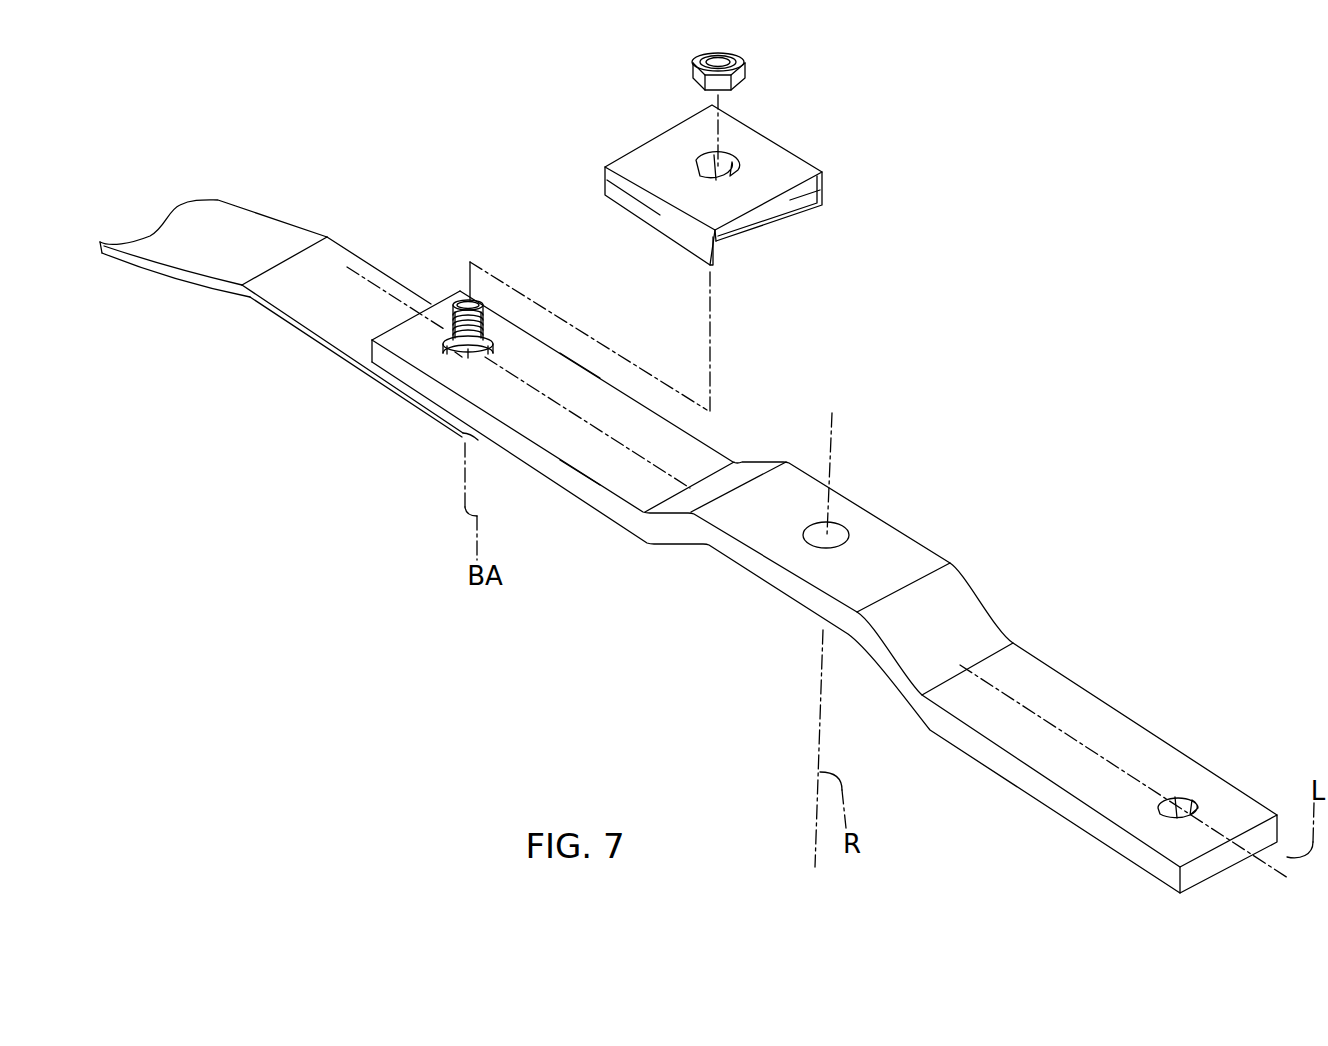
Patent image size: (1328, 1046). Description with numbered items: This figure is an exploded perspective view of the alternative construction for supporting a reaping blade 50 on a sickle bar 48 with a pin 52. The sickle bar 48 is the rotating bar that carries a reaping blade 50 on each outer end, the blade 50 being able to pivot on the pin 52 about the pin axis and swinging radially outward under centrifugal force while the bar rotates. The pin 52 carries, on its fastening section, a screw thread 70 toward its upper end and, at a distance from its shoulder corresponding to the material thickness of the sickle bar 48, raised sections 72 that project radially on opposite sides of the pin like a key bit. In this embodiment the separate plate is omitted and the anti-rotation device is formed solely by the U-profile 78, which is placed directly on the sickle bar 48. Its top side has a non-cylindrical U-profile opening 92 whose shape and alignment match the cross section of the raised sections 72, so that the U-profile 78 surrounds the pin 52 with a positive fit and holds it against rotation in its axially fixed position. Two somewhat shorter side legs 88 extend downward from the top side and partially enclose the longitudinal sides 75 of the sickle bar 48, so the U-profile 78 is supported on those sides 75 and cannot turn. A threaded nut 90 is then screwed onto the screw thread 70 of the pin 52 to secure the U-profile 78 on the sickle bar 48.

The sickle bar 48 is at (888, 560).
The reaping blade 50 is at (268, 288).
The pin 52 is at (477, 328).
The screw thread 70 is at (462, 300).
The raised sections 72 is at (447, 335).
The longitudinal side 75 is at (578, 362).
The U-profile 78 is at (642, 162).
The side legs 88 is at (633, 195).
The threaded nut 90 is at (738, 80).
The U-profile opening 92 is at (700, 150).